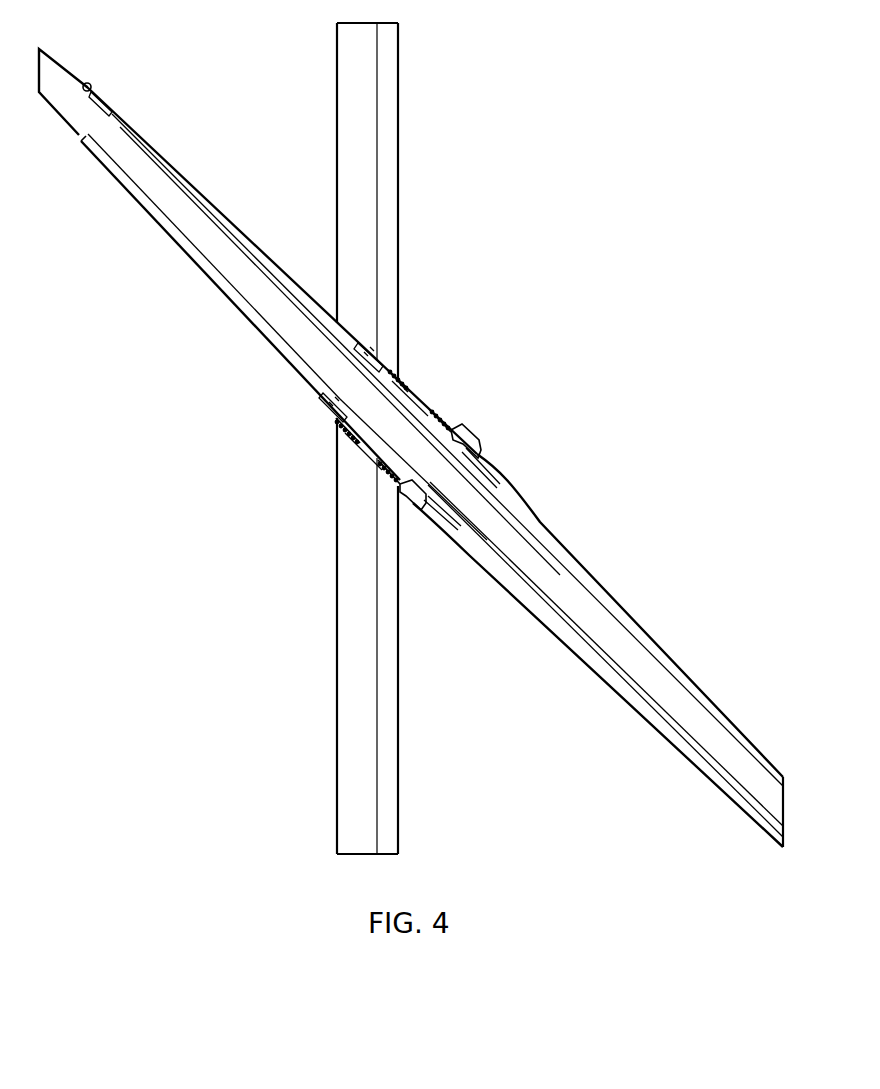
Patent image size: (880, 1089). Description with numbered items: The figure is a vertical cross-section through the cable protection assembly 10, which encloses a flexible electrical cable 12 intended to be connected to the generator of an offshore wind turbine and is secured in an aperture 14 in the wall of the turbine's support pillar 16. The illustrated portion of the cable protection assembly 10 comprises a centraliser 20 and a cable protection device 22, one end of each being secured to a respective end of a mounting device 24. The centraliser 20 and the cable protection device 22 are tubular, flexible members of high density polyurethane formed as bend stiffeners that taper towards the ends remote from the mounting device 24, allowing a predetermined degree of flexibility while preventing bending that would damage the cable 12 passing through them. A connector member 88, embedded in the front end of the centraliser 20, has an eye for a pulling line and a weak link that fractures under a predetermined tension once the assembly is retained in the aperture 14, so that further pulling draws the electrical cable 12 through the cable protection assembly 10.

The cable protection assembly 10 is at (409, 442).
The flexible electrical cable 12 is at (67, 109).
The aperture 14 is at (335, 337).
The support pillar 16 is at (398, 110).
The centraliser 20 is at (157, 227).
The cable protection device 22 is at (565, 555).
The mounting device 24 is at (427, 388).
The connector member 88 is at (89, 83).